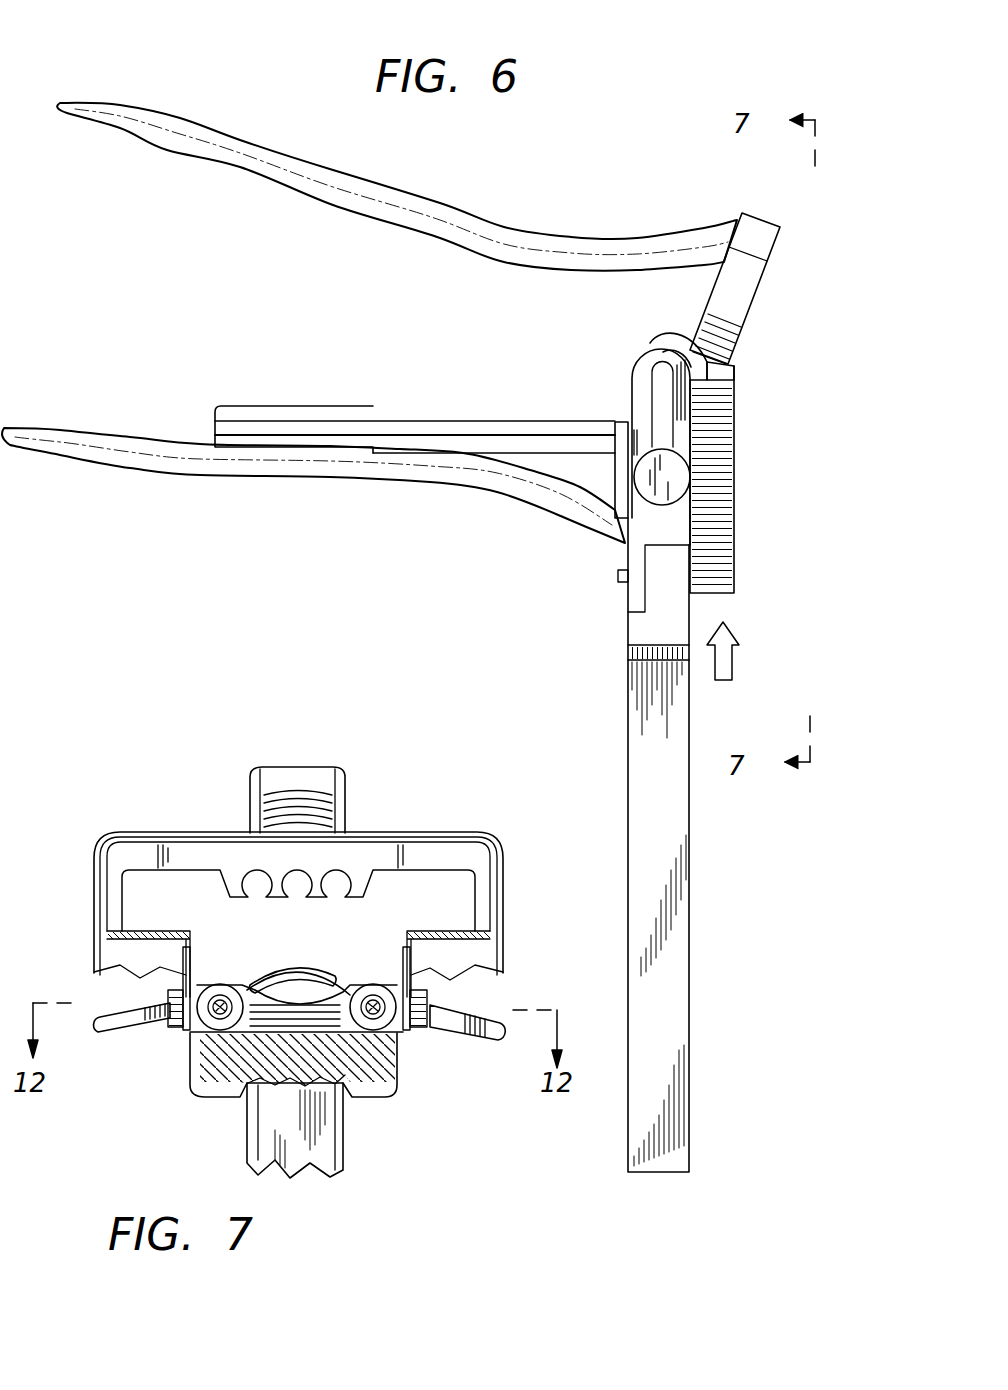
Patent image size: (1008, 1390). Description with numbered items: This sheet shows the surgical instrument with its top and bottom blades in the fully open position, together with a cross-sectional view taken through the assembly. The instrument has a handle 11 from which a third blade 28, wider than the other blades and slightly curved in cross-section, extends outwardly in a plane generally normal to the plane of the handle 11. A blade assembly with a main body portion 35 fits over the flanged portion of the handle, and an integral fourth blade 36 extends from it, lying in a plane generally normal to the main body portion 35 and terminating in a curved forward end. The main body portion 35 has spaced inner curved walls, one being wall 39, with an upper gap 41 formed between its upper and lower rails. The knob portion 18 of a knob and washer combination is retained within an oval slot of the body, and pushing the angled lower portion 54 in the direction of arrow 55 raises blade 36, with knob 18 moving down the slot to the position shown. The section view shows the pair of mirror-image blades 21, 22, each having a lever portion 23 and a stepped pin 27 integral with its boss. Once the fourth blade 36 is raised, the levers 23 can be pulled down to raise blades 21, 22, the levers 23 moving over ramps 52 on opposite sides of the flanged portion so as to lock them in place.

In FIG. 6, the handle 11 is at (689, 950).
In FIG. 7, the handle 11 is at (343, 1158).
In FIG. 6, the knob portion 18 is at (660, 475).
In FIG. 6, the blade 21 is at (284, 420).
In FIG. 7, the blade 21 is at (300, 962).
In FIG. 6, the blade 22 is at (318, 440).
In FIG. 7, the blade 22 is at (347, 977).
In FIG. 7, the lever portion 23 is at (106, 1030).
In FIG. 7, the stepped 3-part pin 27 is at (198, 1033).
In FIG. 6, the third blade 28 is at (206, 466).
In FIG. 6, the main body portion 35 is at (762, 300).
In FIG. 6, the fourth blade 36 is at (240, 142).
In FIG. 7, the fourth blade 36 is at (303, 777).
In FIG. 6, the inner curved wall 39 is at (665, 420).
In FIG. 7, the upper gap 41 is at (360, 866).
In FIG. 6, the ramp 52 is at (612, 582).
In FIG. 7, the ramp 52 is at (393, 1077).
In FIG. 6, the lower portion 54 is at (735, 528).
In FIG. 6, the arrow 55 is at (732, 657).